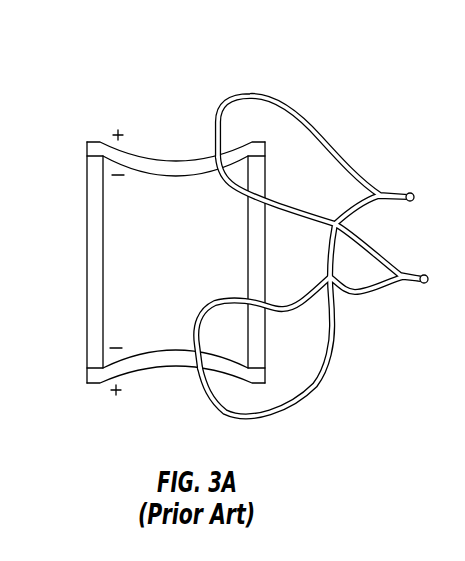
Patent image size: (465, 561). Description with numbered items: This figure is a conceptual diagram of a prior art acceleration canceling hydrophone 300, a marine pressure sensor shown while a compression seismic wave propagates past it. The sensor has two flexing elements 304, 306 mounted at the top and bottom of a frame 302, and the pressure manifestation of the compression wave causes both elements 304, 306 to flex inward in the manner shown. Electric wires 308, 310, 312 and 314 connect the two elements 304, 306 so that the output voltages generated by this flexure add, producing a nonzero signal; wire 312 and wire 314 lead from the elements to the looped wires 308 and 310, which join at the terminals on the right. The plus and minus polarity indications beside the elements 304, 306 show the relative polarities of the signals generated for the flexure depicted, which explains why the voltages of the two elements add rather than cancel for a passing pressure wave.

The acceleration canceling hydrophone 300 is at (231, 247).
The frame 302 is at (266, 253).
The element 304 is at (194, 156).
The element 306 is at (186, 367).
The electric wire 308 is at (280, 96).
The electric wire 310 is at (278, 416).
The electric wire 312 is at (230, 193).
The electric wire 314 is at (193, 328).